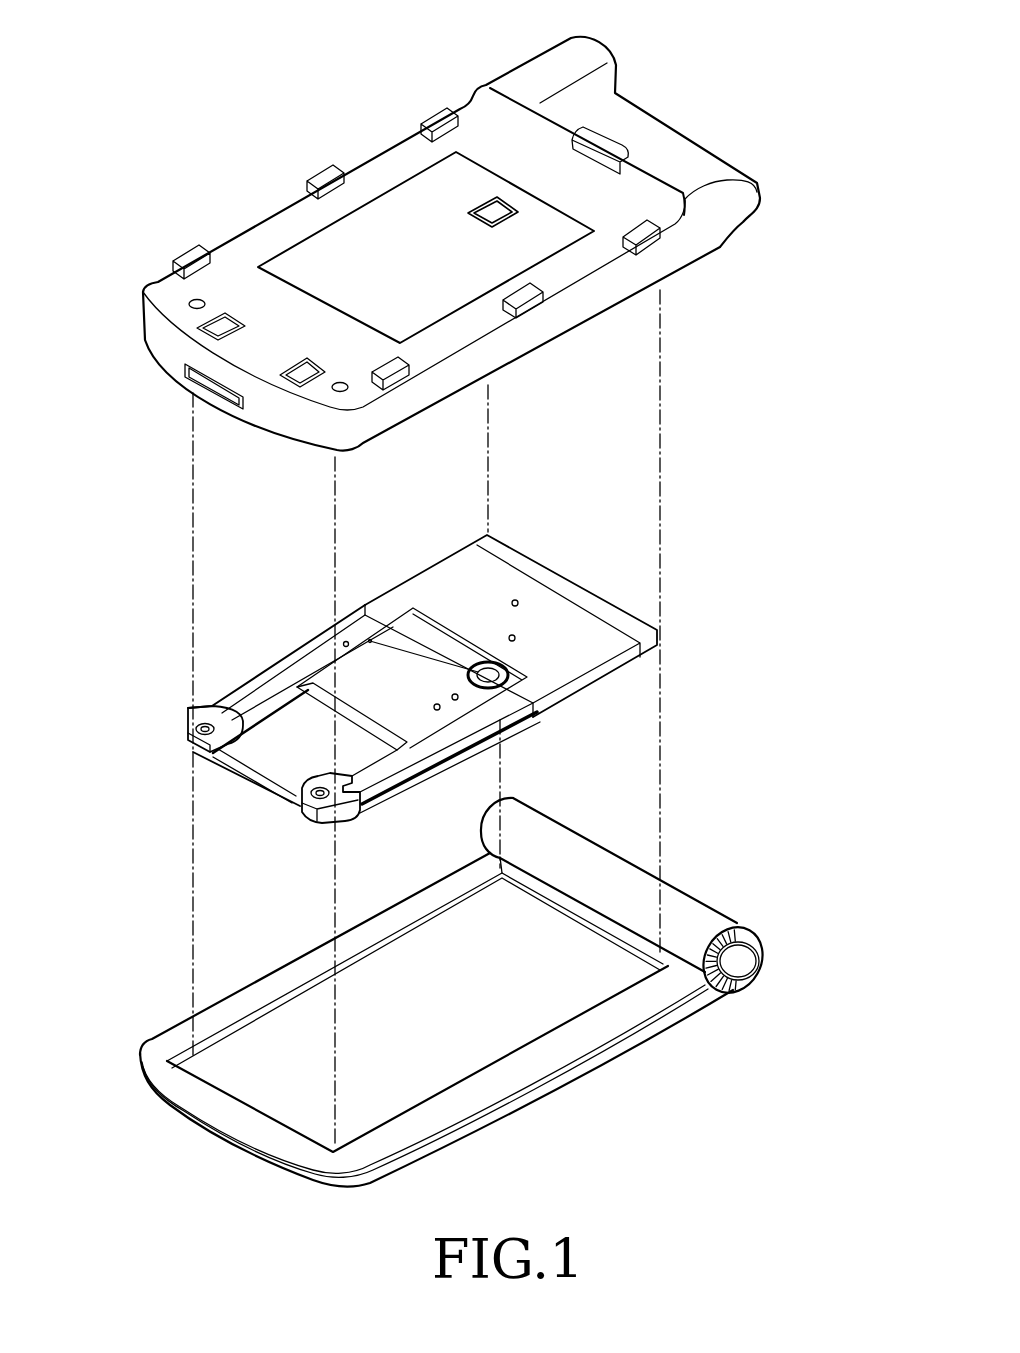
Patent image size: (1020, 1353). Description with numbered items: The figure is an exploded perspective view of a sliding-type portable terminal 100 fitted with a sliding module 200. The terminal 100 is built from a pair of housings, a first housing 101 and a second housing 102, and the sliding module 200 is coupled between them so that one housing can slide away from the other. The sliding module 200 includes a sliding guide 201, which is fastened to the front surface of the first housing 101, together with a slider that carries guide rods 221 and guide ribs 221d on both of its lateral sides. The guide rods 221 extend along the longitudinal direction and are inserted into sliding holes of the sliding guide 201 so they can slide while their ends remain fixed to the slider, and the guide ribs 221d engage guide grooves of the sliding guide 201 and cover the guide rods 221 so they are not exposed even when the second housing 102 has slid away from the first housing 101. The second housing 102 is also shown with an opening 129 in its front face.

The sliding-type portable terminal 100 is at (142, 38).
The first housing 101 is at (345, 148).
The second housing 102 is at (697, 883).
The display window opening 129 is at (263, 1099).
The sliding module 200 is at (184, 715).
The sliding guide 201 is at (446, 548).
The guide rod 221 is at (528, 736).
The guide ribs 221d is at (290, 659).